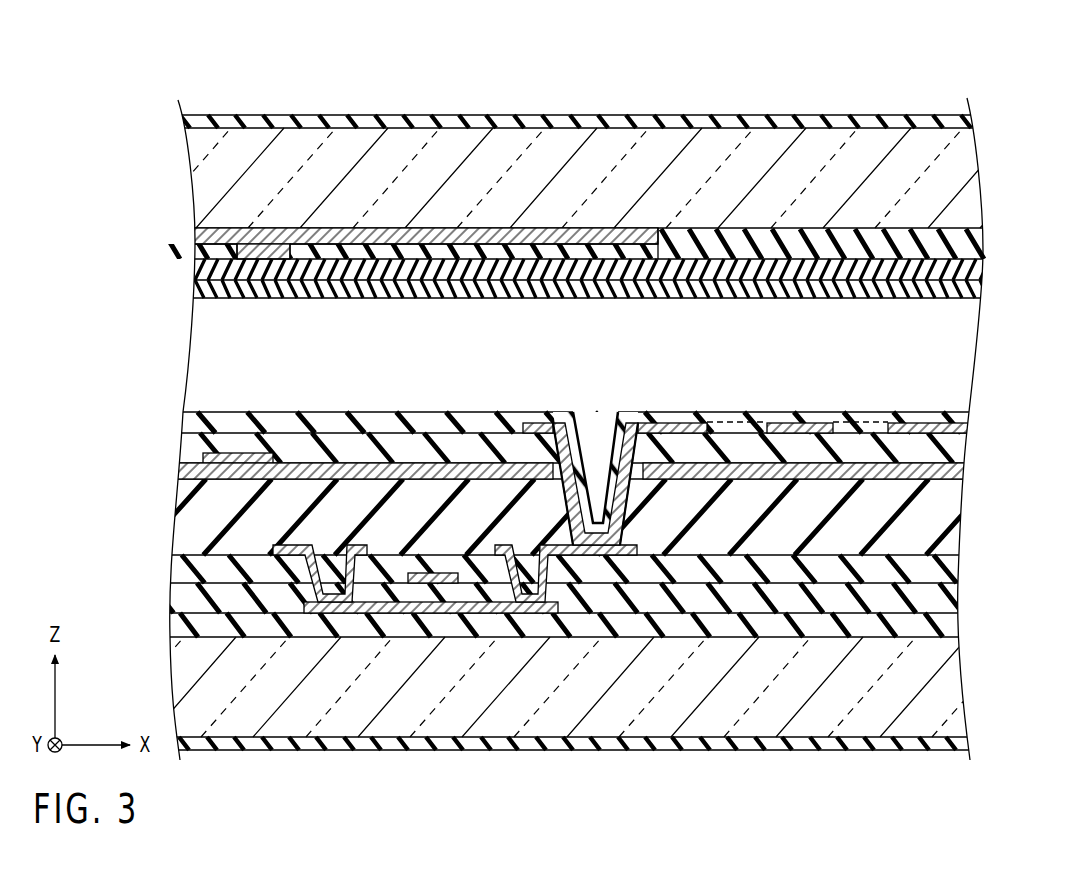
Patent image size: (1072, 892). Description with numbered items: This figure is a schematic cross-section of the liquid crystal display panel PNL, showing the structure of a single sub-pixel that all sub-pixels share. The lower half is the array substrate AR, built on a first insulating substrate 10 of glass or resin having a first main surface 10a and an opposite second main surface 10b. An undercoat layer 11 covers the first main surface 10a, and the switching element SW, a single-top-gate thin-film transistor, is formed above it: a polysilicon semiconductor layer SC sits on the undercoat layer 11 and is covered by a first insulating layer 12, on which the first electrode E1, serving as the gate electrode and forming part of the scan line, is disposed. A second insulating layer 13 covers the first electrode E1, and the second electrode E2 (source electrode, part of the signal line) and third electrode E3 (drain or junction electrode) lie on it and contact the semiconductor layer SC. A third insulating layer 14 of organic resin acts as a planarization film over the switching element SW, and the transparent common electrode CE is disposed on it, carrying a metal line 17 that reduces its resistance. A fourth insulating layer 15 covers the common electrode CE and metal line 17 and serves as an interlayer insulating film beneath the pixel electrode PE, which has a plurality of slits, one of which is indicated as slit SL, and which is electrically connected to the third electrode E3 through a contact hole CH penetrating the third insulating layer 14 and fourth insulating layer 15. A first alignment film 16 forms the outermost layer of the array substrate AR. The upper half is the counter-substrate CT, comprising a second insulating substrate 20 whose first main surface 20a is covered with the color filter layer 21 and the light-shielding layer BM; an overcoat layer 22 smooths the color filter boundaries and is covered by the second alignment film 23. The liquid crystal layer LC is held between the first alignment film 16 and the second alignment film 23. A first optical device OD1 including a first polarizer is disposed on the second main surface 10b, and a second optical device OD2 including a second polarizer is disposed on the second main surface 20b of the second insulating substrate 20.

The liquid crystal display panel PNL is at (582, 430).
The second optical device OD2 is at (720, 124).
The second main surface 20b is at (905, 124).
The counter-substrate CT is at (579, 201).
The second insulating substrate 20 is at (165, 188).
The first main surface 20a is at (935, 238).
The color filter layer 21 is at (977, 252).
The light-shielding layer BM is at (354, 238).
The overcoat layer 22 is at (165, 270).
The second alignment film 23 is at (165, 291).
The liquid crystal layer LC is at (968, 346).
The first alignment film 16 is at (165, 421).
The fourth insulating layer 15 is at (165, 449).
The metal line 17 is at (240, 455).
The common electrode CE is at (393, 470).
The third insulating layer 14 is at (165, 512).
The second insulating layer 13 is at (165, 573).
The first insulating layer 12 is at (165, 603).
The undercoat layer 11 is at (165, 628).
The first insulating substrate 10 is at (165, 685).
The first main surface 10a is at (935, 628).
The second main surface 10b is at (930, 742).
The switching element SW is at (455, 646).
The semiconductor layer SC is at (422, 613).
The first electrode E1 is at (437, 573).
The second electrode E2 is at (303, 547).
The third electrode E3 is at (503, 548).
The pixel electrode PE is at (681, 424).
The contact hole CH is at (600, 437).
The slit SL is at (741, 408).
The array substrate AR is at (584, 577).
The first optical device OD1 is at (576, 769).